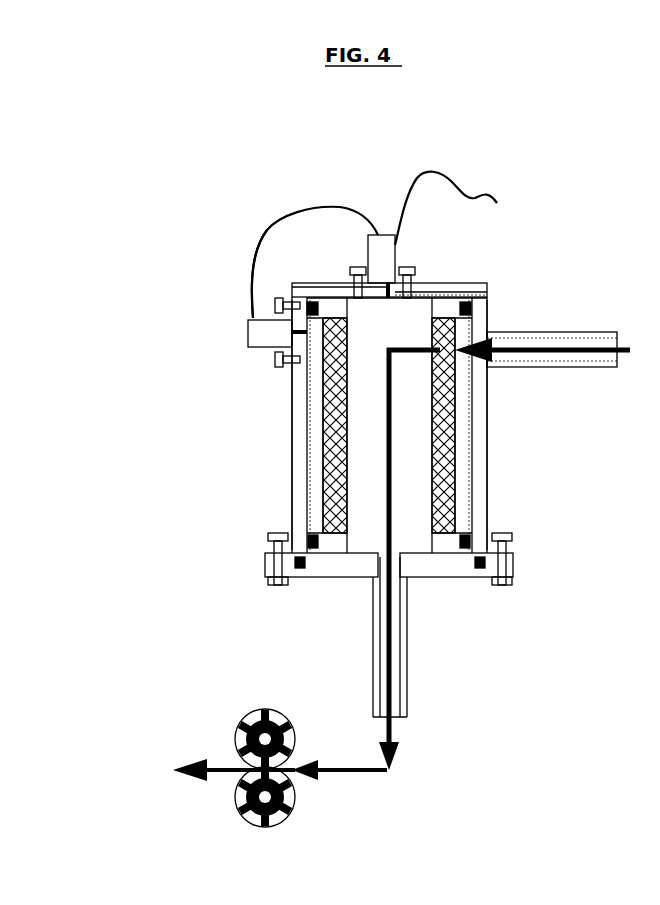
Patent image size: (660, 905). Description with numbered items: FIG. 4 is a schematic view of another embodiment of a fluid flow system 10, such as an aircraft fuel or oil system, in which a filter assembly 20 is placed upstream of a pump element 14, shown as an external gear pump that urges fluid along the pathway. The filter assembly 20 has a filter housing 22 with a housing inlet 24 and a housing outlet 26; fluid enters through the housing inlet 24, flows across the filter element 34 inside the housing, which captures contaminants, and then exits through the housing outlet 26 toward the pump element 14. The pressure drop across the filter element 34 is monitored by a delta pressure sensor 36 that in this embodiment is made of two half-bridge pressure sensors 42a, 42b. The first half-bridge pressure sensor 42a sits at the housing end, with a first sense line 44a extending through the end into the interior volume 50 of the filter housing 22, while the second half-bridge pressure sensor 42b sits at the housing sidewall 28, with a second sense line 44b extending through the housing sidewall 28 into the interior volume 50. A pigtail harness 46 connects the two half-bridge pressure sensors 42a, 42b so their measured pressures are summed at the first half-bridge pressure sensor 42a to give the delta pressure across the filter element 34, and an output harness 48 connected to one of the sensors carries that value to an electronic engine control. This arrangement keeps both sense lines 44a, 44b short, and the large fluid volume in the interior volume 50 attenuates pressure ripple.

The fluid flow system 10 is at (73, 266).
The pump element 14 is at (218, 737).
The filter assembly 20 is at (335, 548).
The filter housing 22 is at (480, 482).
The housing inlet 24 is at (477, 367).
The housing outlet 26 is at (402, 560).
The housing sidewall 28 is at (292, 422).
The filter element 34 is at (443, 437).
The delta pressure sensor 36 is at (290, 208).
The first half-bridge pressure sensor 42a is at (400, 248).
The second half-bridge pressure sensor 42b is at (248, 333).
The first sense line 44a is at (440, 293).
The second sense line 44b is at (300, 328).
The pigtail harness 46 is at (260, 237).
The output harness 48 is at (462, 188).
The interior volume 50 is at (387, 513).